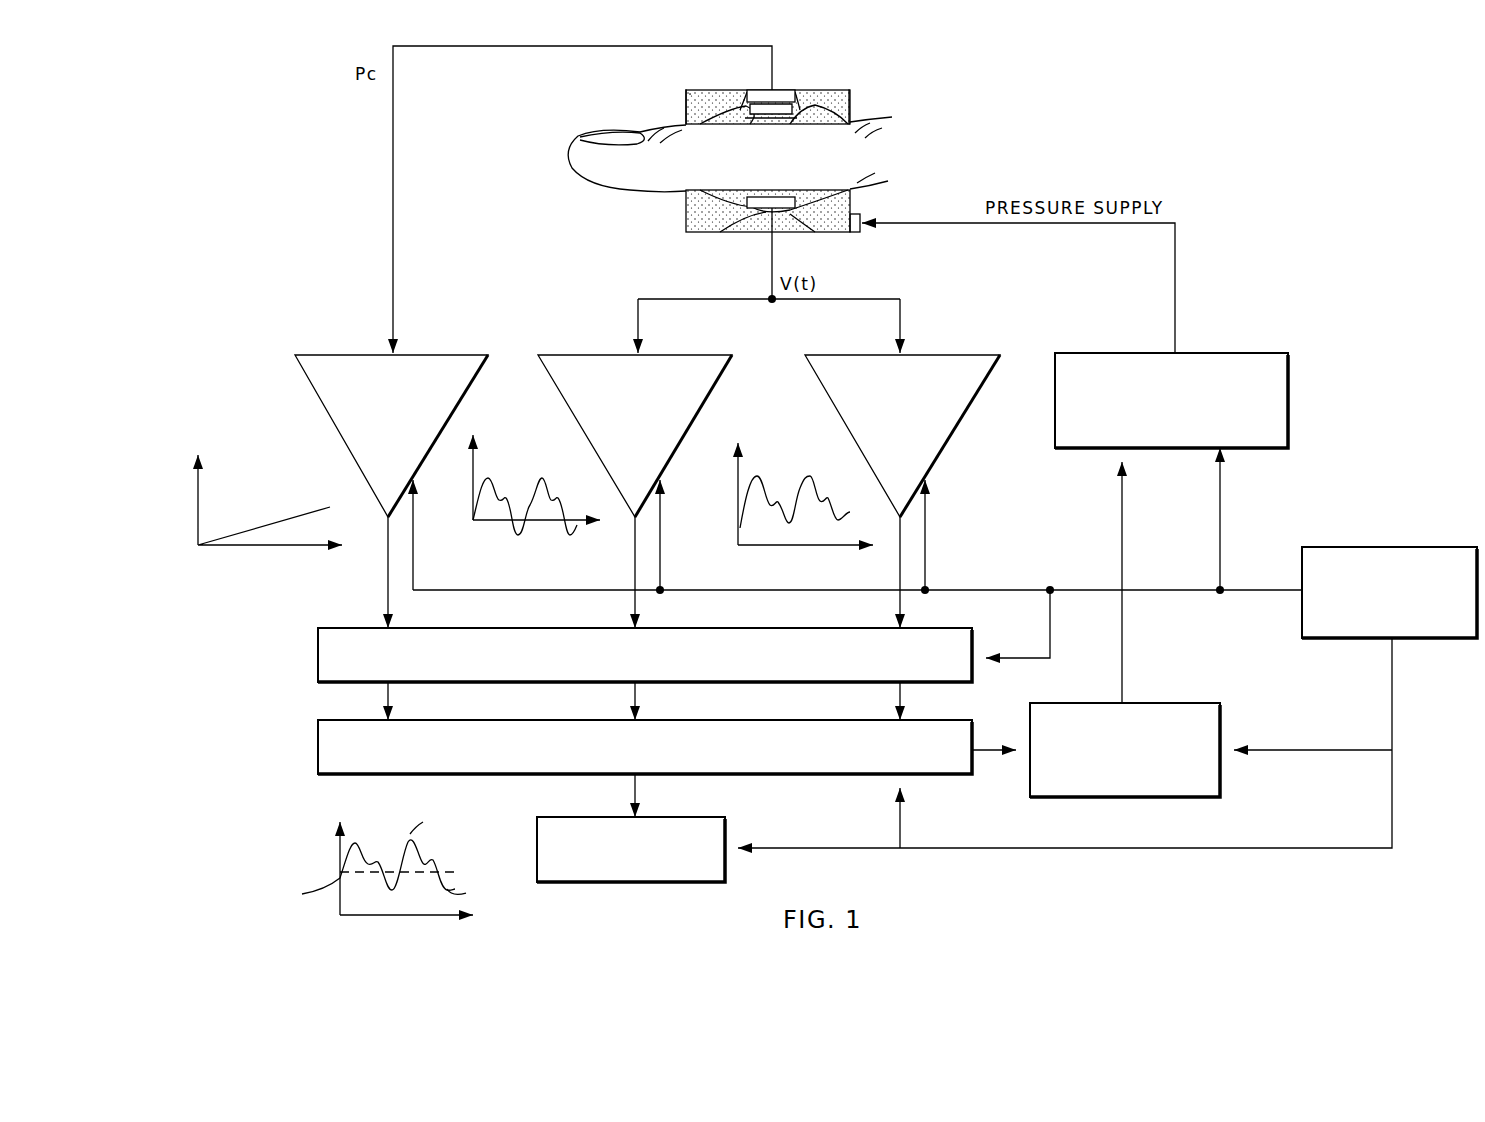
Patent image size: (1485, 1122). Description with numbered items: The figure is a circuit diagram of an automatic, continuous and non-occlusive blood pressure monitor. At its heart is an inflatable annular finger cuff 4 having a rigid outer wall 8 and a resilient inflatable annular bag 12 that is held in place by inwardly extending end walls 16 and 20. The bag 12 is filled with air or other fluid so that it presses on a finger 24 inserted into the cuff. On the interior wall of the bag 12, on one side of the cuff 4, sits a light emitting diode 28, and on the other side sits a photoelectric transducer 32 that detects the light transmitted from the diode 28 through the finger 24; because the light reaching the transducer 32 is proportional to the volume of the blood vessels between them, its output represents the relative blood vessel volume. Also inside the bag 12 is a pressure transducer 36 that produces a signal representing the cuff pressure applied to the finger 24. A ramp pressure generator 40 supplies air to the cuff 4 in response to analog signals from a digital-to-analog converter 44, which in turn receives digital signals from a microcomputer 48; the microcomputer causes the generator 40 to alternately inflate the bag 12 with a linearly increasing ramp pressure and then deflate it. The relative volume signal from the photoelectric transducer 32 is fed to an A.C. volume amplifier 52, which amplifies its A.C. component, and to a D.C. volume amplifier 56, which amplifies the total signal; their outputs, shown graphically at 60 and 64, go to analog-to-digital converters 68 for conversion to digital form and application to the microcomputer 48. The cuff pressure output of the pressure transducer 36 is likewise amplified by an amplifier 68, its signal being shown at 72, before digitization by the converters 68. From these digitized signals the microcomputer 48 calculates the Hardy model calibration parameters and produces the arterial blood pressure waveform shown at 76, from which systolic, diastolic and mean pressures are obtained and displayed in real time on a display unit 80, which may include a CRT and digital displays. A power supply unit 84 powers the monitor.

The inflatable annular finger cuff 4 is at (686, 232).
The rigid outer wall 8 is at (762, 232).
The resilient inflatable annular bag 12 is at (735, 95).
The inwardly extending end wall 16 is at (686, 104).
The inwardly extending end wall 20 is at (852, 98).
The finger 24 is at (570, 158).
The light emitting diode 28 is at (769, 113).
The photoelectric transducer 32 is at (783, 212).
The pressure transducer 36 is at (773, 92).
The ramp pressure generator 40 is at (1222, 353).
The digital-to-analog converter 44 is at (1175, 703).
The microcomputer 48 is at (667, 765).
The A.C. volume amplifier 52 is at (676, 355).
The D.C. volume amplifier 56 is at (940, 355).
The A.C. volume amplifier output waveform 60 is at (505, 525).
The D.C. volume amplifier output waveform 64 is at (732, 520).
The analog-to-digital converters 68 is at (420, 355).
The cuff pressure signal waveform 72 is at (212, 547).
The arterial blood pressure waveform P(t) 76 is at (302, 894).
The display unit 80 is at (631, 828).
The power supply unit 84 is at (1418, 547).